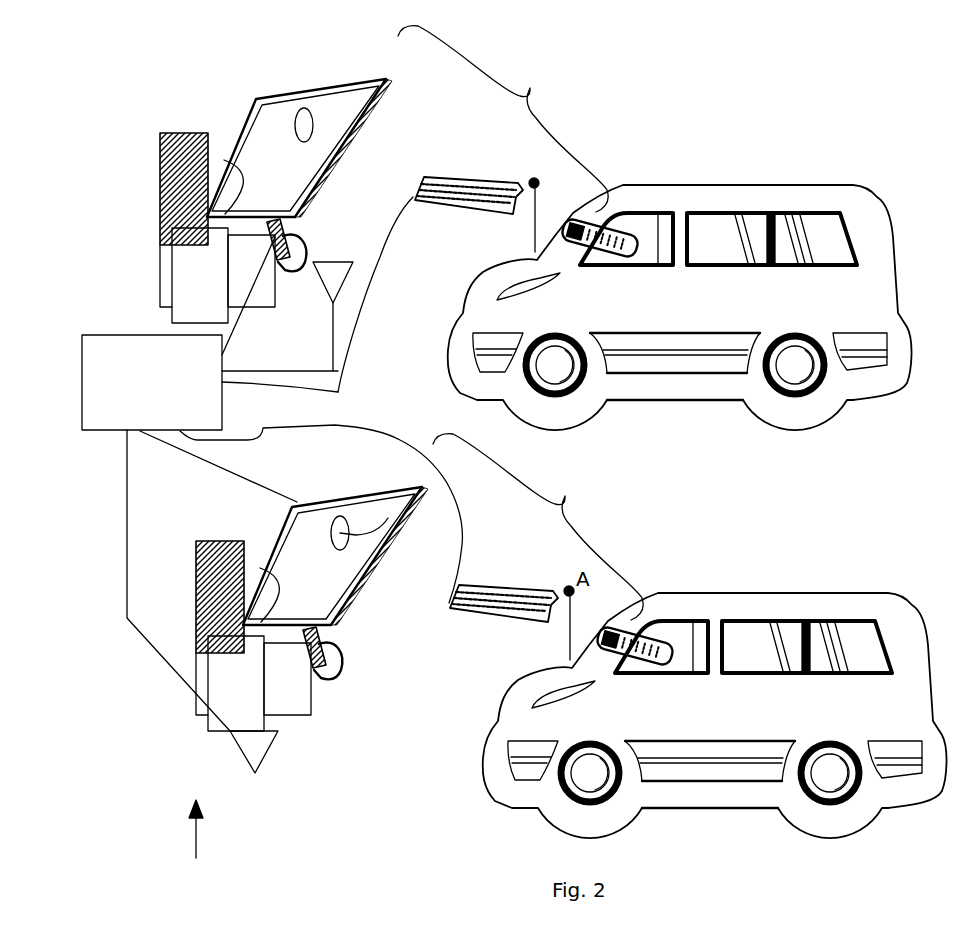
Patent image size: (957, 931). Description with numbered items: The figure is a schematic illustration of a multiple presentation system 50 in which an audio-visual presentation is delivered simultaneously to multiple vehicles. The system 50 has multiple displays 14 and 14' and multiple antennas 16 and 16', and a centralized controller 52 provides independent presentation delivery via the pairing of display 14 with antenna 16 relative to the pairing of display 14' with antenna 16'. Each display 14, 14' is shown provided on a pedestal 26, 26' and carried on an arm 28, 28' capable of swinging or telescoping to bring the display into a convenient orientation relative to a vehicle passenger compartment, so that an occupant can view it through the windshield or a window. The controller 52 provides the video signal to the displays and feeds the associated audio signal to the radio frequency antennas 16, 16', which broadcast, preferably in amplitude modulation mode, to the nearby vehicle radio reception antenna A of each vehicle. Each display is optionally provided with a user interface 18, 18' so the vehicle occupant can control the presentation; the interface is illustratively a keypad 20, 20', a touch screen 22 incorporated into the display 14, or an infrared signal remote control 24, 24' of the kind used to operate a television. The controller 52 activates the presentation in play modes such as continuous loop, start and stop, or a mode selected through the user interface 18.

The display 14 is at (276, 217).
The radio frequency antenna 16 is at (289, 316).
The user interface 18 is at (473, 209).
The keypad 20 is at (469, 183).
The touch screen 22 is at (304, 125).
The infrared signal remote control 24 is at (599, 226).
The pedestal 26 is at (162, 165).
The arm 28 is at (223, 146).
The multiple presentation system 50 is at (199, 845).
The centralized controller 52 is at (155, 396).
The vehicle radio reception antenna A is at (542, 205).
The display 14' is at (312, 609).
The antenna 16' is at (254, 752).
The wireless network 18' is at (538, 527).
The keyboard 20' is at (504, 591).
The mobile phone 24' is at (634, 634).
The power supply 26' is at (198, 573).
The cable 28' is at (259, 554).